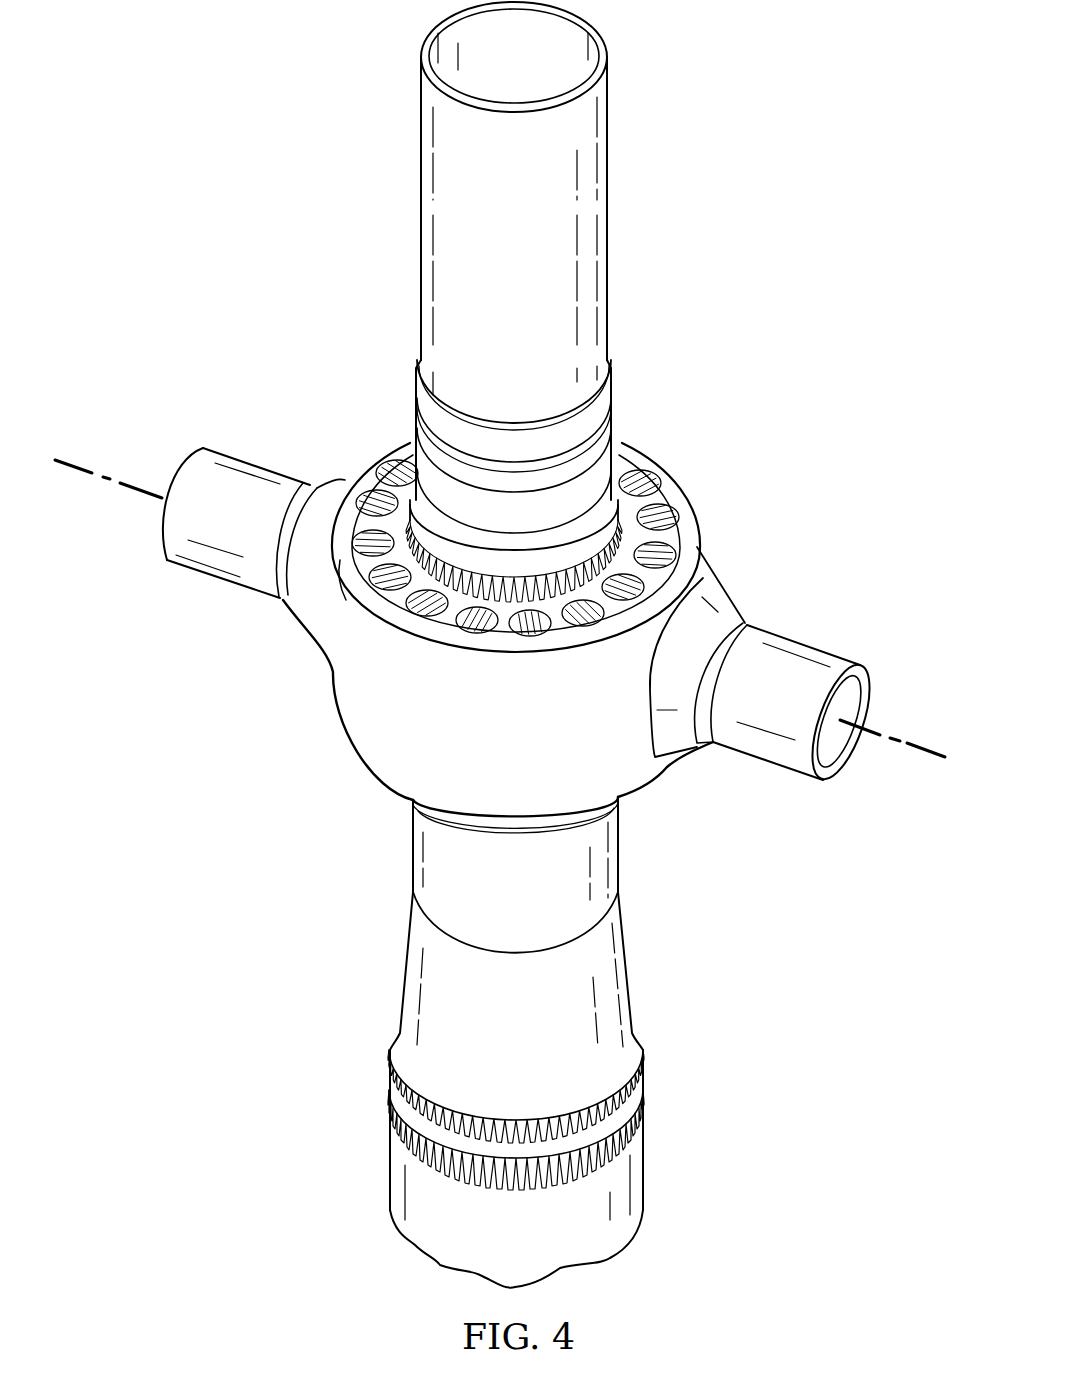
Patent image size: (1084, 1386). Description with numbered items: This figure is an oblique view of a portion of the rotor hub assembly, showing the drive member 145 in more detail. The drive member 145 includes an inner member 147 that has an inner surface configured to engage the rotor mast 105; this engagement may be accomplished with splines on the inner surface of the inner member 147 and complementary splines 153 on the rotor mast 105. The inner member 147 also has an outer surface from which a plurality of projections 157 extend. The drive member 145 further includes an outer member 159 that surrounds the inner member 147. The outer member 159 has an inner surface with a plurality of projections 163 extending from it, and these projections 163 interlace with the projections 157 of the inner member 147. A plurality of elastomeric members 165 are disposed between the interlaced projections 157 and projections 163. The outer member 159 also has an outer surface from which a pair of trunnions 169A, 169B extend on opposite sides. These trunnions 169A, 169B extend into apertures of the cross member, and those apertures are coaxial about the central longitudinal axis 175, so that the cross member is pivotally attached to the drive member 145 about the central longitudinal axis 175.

The rotor mast 105 is at (609, 166).
The drive member 145 is at (512, 548).
The inner member 147 is at (638, 495).
The splines 153 is at (590, 594).
The projections 157 is at (357, 563).
The outer member 159 is at (342, 745).
The projections 163 is at (410, 592).
The elastomeric members 165 is at (537, 627).
The trunnion 169A is at (810, 645).
The trunnion 169B is at (216, 582).
The central longitudinal axis 175 is at (78, 470).